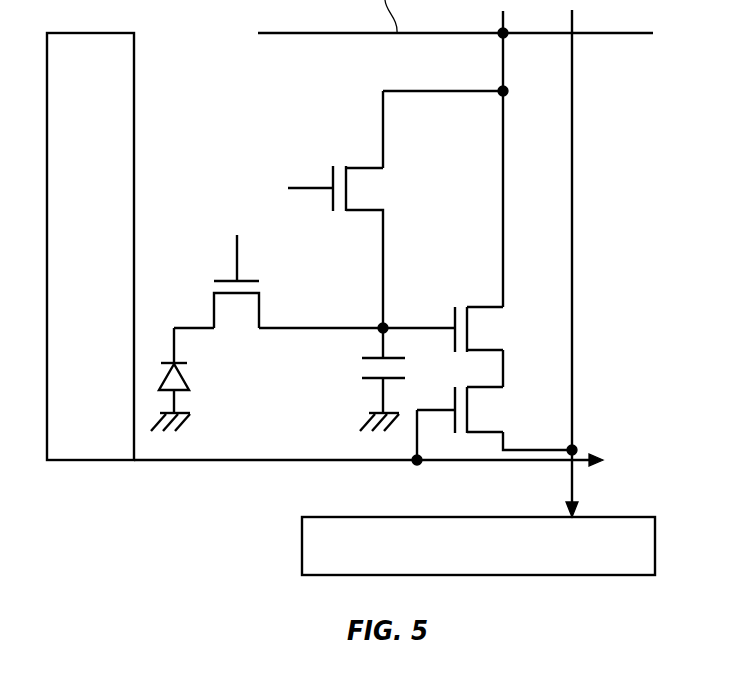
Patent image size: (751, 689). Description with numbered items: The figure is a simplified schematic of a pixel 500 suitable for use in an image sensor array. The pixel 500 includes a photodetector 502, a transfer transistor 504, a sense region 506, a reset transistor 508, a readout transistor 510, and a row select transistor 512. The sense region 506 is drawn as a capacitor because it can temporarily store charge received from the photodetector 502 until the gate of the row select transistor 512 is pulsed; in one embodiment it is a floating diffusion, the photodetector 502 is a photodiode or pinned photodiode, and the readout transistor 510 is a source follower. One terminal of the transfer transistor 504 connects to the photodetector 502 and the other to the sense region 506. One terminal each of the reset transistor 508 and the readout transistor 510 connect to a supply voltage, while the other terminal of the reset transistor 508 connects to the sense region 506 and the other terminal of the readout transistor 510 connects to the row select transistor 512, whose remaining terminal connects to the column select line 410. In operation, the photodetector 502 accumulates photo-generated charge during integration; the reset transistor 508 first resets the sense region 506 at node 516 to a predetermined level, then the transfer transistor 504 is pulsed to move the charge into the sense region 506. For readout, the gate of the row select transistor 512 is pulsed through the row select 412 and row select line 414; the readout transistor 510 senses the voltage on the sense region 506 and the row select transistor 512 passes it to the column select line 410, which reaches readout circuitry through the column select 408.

The pixel 500 is at (197, 76).
The photodetector 502 is at (183, 376).
The transfer transistor 504 is at (240, 250).
The sense region 506 is at (366, 382).
The reset transistor 508 is at (372, 165).
The readout transistor 510 is at (485, 305).
The row select transistor 512 is at (483, 433).
The node 516 is at (385, 322).
The column select 408 is at (300, 553).
The column select line 410 is at (575, 390).
The row select 412 is at (87, 462).
The row select line 414 is at (162, 462).